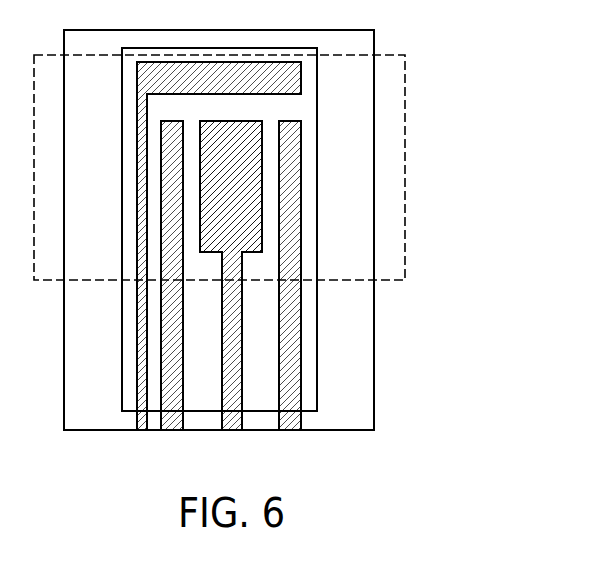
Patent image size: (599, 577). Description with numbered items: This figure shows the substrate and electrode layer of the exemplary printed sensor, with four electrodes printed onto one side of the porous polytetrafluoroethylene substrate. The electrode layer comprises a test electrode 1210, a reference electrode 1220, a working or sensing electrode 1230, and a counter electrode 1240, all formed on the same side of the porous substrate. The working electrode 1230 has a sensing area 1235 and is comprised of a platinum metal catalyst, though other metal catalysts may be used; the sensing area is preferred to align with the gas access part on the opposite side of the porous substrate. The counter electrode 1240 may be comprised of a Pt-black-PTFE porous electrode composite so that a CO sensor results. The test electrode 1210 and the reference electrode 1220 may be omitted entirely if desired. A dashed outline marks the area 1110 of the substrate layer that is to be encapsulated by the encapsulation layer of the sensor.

The area to be encapsulated 1110 is at (390, 55).
The test electrode 1210 is at (142, 423).
The reference electrode 1220 is at (170, 423).
The working electrode 1230 is at (230, 423).
The sensing area 1235 is at (250, 213).
The counter electrode 1240 is at (288, 423).